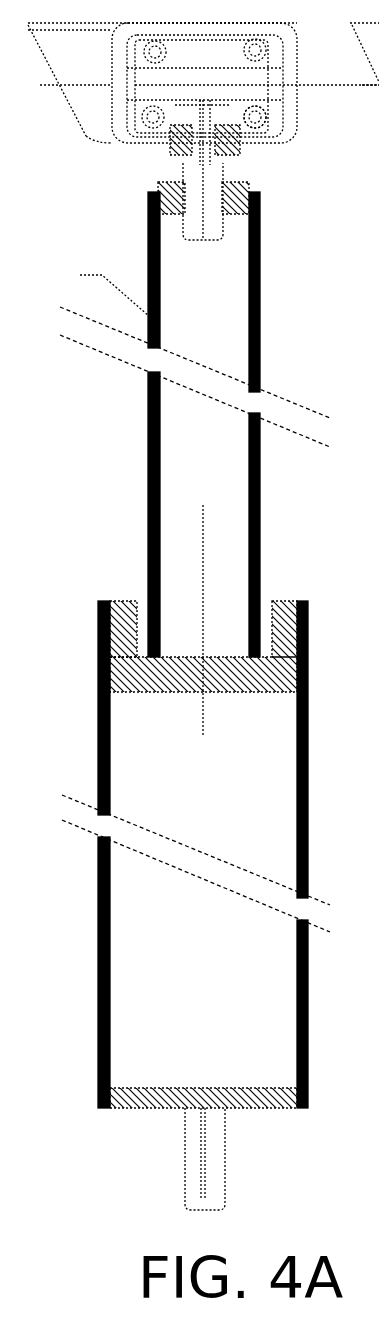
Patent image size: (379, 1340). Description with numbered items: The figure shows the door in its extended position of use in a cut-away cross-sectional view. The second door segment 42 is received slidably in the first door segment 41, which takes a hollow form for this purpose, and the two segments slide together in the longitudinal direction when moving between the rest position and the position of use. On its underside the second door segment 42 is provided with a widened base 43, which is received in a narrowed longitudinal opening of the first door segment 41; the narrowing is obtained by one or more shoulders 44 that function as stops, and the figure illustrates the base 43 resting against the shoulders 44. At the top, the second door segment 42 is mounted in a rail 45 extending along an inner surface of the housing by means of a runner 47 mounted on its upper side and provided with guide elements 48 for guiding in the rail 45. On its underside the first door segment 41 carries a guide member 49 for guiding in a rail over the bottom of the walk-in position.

The first door segment 41 is at (100, 875).
The second door segment 42 is at (150, 410).
The widened base 43 is at (166, 634).
The shoulders 44 is at (166, 607).
The rail 45 is at (118, 115).
The runner 47 is at (142, 173).
The guide elements 48 is at (262, 112).
The guide member 49 is at (155, 1173).